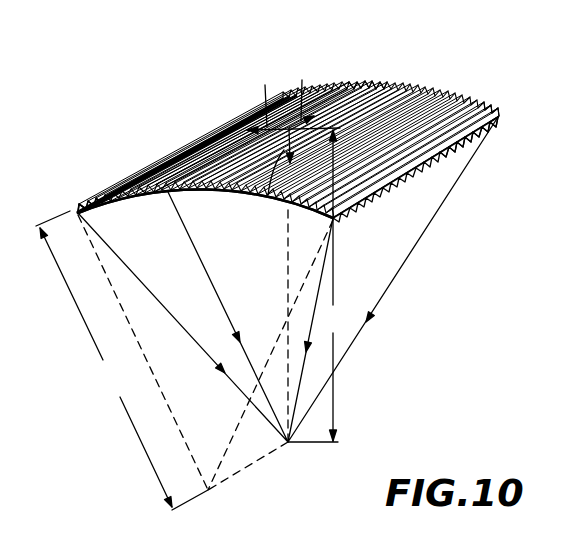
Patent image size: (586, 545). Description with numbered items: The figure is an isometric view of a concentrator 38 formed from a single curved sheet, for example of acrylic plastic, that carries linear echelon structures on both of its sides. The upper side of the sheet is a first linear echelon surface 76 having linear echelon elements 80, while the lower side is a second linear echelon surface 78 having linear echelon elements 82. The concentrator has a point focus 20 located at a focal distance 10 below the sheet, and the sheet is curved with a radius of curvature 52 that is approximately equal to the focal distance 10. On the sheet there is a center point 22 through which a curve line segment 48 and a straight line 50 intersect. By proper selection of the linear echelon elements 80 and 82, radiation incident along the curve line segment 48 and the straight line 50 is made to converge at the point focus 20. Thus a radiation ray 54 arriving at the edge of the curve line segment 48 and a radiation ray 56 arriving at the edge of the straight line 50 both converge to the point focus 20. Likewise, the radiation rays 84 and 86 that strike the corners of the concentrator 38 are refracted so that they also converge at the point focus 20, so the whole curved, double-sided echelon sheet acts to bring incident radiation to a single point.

The focal distance 10 is at (288, 279).
The point focus 20 is at (288, 442).
The center point 22 is at (289, 128).
The reflective grooved surface 38 is at (221, 85).
The curve line segment 48 is at (462, 171).
The straight line 50 is at (335, 126).
The radius of curvature 52 is at (104, 359).
The radiation ray 54 is at (158, 97).
The radiation ray 56 is at (368, 42).
The first linear echelon surface 76 is at (104, 194).
The second linear echelon surface 78 is at (236, 193).
The linear echelon elements 80 is at (163, 173).
The linear echelon elements 82 is at (416, 186).
The radiation ray 84 is at (78, 185).
The radiation ray 86 is at (498, 45).